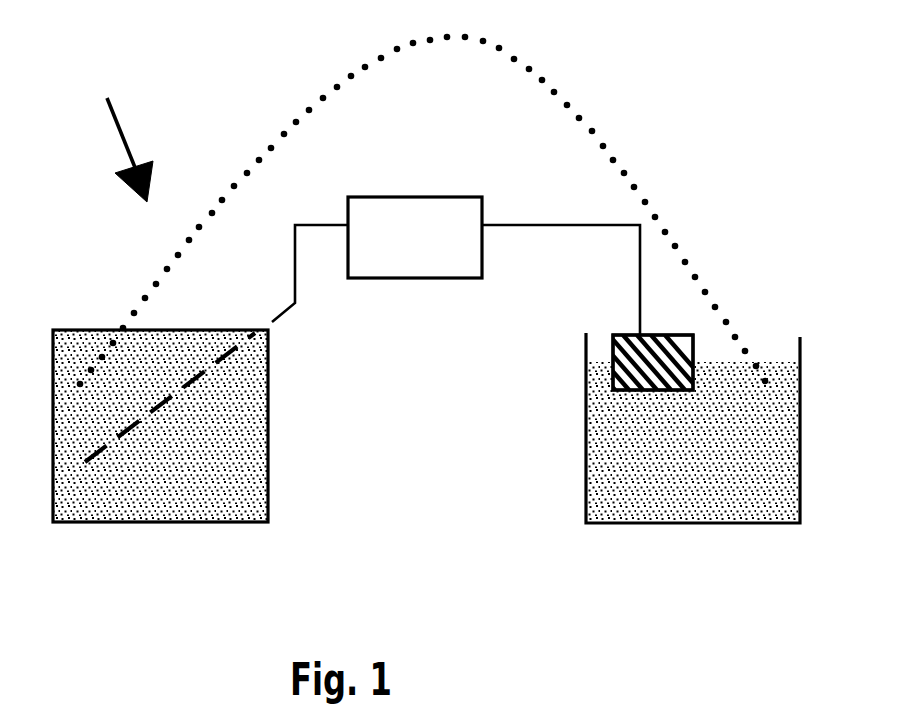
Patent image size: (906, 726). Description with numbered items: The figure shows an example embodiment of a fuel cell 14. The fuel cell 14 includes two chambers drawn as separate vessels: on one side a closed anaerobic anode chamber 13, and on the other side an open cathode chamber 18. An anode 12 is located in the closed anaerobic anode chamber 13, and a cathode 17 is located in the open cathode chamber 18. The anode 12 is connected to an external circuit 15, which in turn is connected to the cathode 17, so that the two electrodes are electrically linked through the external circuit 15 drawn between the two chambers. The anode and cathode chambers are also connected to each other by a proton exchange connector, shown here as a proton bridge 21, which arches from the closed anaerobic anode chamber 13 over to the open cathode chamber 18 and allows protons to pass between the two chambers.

The anode 12 is at (168, 393).
The closed anaerobic anode chamber 13 is at (270, 373).
The fuel cell 14 is at (115, 127).
The external circuit 15 is at (415, 237).
The cathode 17 is at (697, 333).
The open cathode chamber 18 is at (586, 376).
The proton bridge 21 is at (613, 160).